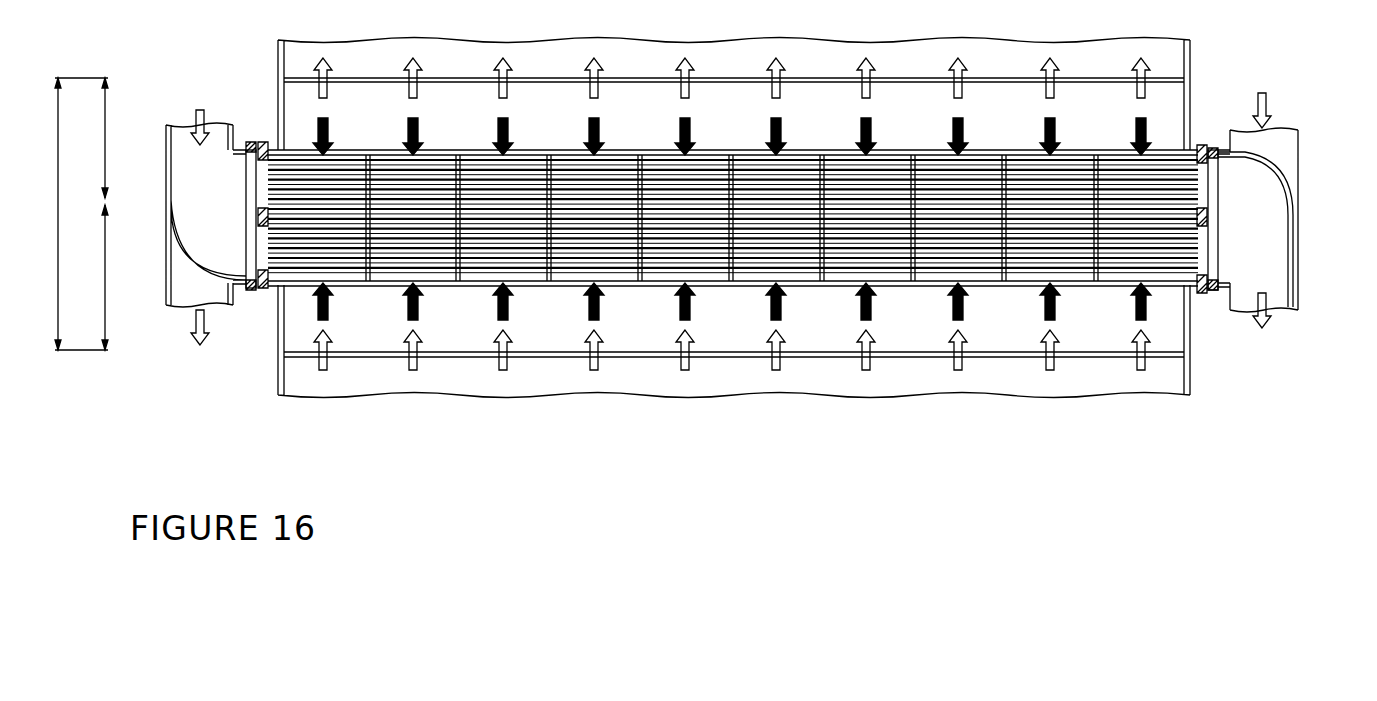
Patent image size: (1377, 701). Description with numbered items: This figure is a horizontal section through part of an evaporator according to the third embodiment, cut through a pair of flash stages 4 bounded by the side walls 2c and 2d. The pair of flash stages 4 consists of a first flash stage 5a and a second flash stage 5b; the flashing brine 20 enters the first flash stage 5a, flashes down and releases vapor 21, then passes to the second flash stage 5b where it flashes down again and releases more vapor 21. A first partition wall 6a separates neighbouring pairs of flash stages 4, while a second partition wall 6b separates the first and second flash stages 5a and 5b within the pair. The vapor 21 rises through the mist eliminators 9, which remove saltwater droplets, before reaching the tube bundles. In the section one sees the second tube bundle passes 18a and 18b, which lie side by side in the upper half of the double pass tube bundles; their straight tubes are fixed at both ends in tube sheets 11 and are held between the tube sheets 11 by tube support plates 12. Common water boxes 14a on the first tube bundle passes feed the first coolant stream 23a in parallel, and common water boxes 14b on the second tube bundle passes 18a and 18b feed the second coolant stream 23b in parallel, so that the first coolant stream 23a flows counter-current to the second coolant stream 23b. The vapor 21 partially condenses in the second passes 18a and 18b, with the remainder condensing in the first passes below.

The side wall 2c is at (278, 110).
The side wall 2d is at (1190, 380).
The first partition wall 6a is at (838, 80).
The second partition wall 6b is at (975, 215).
The second tube bundle pass 18b is at (385, 163).
The second tube bundle pass 18a is at (400, 268).
The tube support plate 12 is at (458, 162).
The flashing brine 20 is at (503, 58).
The vapor 21 is at (685, 122).
The mist eliminator 9 is at (990, 129).
The tube sheet 11 is at (262, 290).
The common water box 14b is at (166, 160).
The common water box 14a is at (1298, 155).
The second coolant stream 23b is at (195, 113).
The first coolant stream 23a is at (200, 345).
The pair of flash stages 4 is at (58, 215).
The second flash stage 5b is at (105, 160).
The first flash stage 5a is at (105, 262).